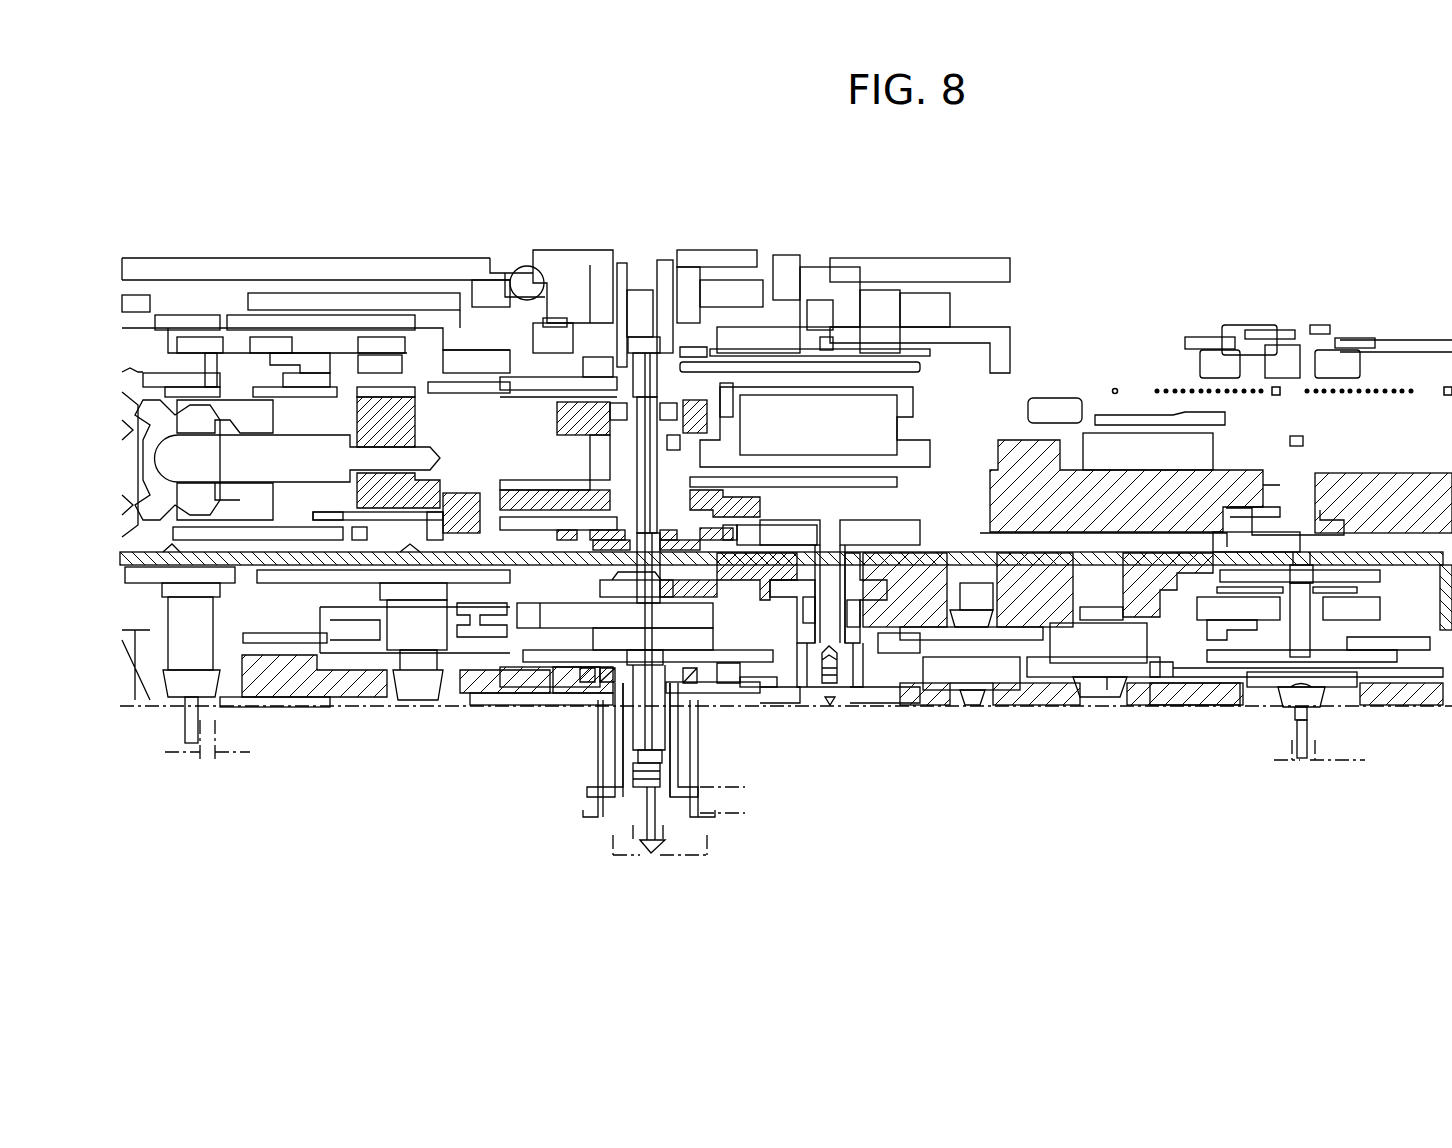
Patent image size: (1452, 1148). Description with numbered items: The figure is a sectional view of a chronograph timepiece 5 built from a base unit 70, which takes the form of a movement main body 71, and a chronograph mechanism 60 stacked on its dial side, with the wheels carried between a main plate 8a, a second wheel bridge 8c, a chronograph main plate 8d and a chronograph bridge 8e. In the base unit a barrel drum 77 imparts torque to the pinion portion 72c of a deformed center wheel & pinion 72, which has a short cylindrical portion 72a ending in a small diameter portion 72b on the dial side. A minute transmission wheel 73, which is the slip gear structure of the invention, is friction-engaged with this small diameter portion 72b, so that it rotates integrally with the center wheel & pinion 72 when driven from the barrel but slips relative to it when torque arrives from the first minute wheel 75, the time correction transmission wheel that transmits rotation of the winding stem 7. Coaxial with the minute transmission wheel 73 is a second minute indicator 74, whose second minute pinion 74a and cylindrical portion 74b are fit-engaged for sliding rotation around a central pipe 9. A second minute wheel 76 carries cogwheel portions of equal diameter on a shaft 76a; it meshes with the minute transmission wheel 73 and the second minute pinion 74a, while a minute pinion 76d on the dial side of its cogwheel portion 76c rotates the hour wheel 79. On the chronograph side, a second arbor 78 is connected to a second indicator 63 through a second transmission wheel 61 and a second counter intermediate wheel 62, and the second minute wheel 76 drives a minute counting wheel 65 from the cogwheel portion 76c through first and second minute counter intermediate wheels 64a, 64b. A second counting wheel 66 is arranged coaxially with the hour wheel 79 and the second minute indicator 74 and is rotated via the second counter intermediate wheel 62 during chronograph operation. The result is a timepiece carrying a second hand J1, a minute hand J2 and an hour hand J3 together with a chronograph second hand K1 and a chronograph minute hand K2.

The timepiece 5 is at (1150, 195).
The winding stem 7 is at (290, 455).
The main plate 8a is at (1390, 470).
The second wheel bridge 8c is at (603, 555).
The chronograph main plate 8d is at (1420, 575).
The chronograph bridge 8e is at (288, 683).
The central pipe 9 is at (600, 716).
The chronograph mechanism 60 is at (305, 843).
The second transmission wheel 61 is at (603, 573).
The second counter intermediate wheel 62 is at (413, 638).
The second indicator 63 is at (180, 660).
The first minute counter intermediate wheel 64a is at (983, 670).
The second minute counter intermediate wheel 64b is at (1118, 660).
The minute counting wheel 65 is at (1275, 725).
The second counting wheel 66 is at (630, 870).
The base unit 70 is at (160, 184).
The movement main body 71 is at (1017, 193).
The deformed center wheel & pinion 72 is at (667, 450).
The short cylindrical portion 72a is at (583, 402).
The small diameter portion 72b is at (705, 470).
The pinion portion 72c is at (835, 420).
The minute transmission wheel 73 is at (600, 525).
The second minute indicator 74 is at (672, 748).
The second minute pinion 74a is at (712, 672).
The cylindrical portion 74b is at (670, 762).
The first minute wheel 75 is at (510, 525).
The second minute wheel 76 is at (832, 605).
The shaft 76a is at (900, 690).
The cogwheel portion 76c is at (780, 672).
The minute pinion 76d is at (855, 660).
The barrel drum 77 is at (905, 322).
The second arbor 78 is at (628, 480).
The hour wheel 79 is at (607, 768).
The second hand J1 is at (228, 752).
The minute hand J2 is at (745, 838).
The hour hand J3 is at (745, 788).
The chronograph second hand K1 is at (690, 870).
The chronograph minute hand K2 is at (1335, 770).